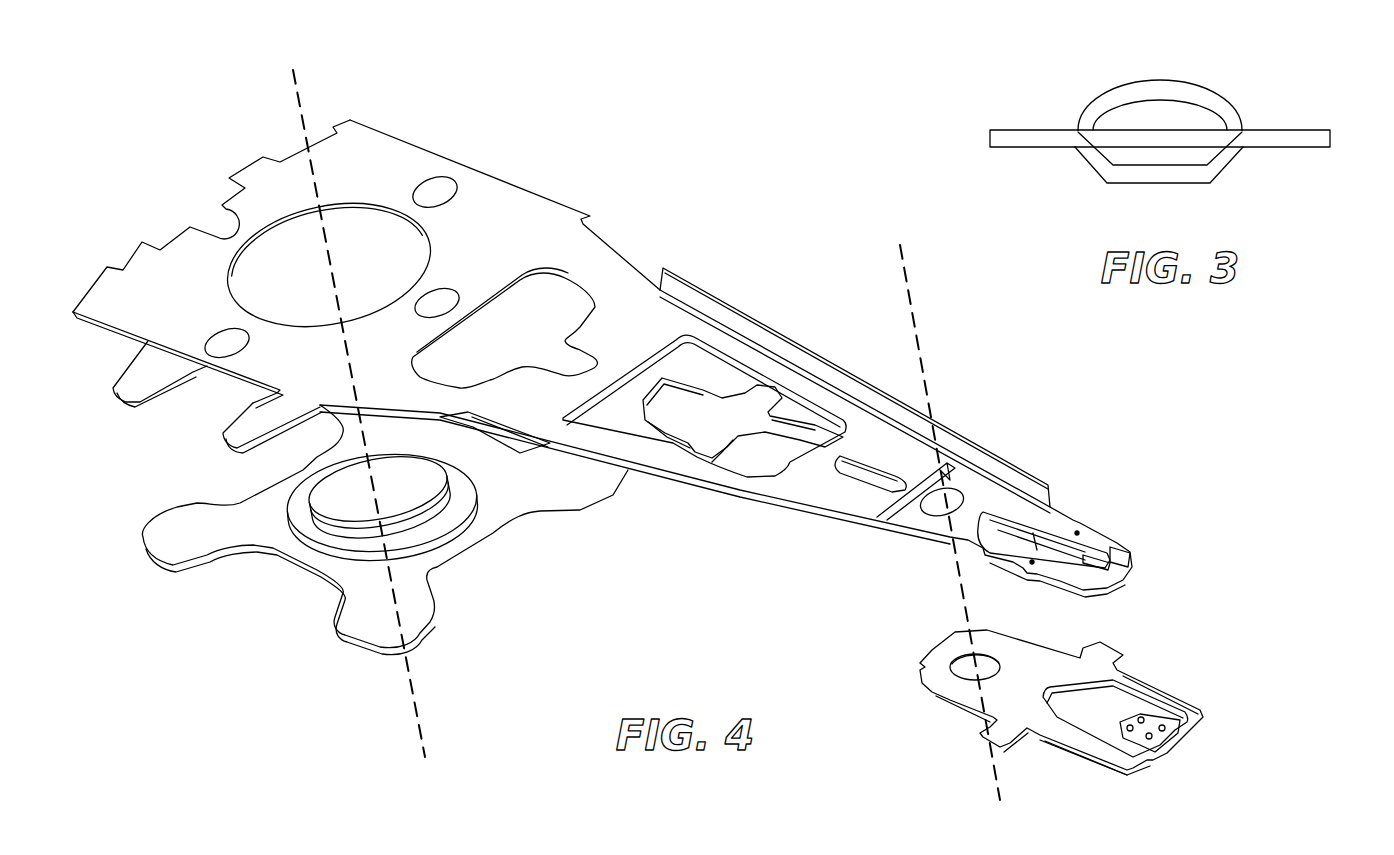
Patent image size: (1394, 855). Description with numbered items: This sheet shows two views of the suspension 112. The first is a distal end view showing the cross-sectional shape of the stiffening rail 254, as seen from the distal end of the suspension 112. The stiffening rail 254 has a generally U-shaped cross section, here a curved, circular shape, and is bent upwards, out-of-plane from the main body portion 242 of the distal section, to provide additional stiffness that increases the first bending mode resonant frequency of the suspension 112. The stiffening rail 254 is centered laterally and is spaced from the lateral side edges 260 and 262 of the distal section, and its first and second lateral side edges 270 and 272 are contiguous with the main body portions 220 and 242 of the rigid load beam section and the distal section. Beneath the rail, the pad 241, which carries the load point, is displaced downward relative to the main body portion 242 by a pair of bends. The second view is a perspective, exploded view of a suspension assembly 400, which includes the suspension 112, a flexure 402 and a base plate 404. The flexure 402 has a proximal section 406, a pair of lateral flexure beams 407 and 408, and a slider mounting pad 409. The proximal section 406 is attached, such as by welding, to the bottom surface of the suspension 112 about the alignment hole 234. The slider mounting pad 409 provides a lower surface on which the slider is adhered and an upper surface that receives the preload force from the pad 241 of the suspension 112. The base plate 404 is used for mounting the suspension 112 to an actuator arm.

In FIG. 4, the suspension 112 is at (545, 192).
In FIG. 3, the suspension 112 is at (1245, 75).
In FIG. 4, the suspension assembly 400 is at (762, 255).
In FIG. 4, the base plate 404 is at (493, 533).
In FIG. 4, the alignment hole 234 is at (957, 487).
In FIG. 4, the pad 241 is at (1121, 543).
In FIG. 3, the pad 241 is at (1153, 185).
In FIG. 4, the flexure 402 is at (1137, 667).
In FIG. 4, the proximal section 406 is at (937, 680).
In FIG. 4, the lateral flexure beam 407 is at (1153, 690).
In FIG. 4, the lateral flexure beam 408 is at (1077, 747).
In FIG. 4, the slider mounting pad 409 is at (1140, 750).
In FIG. 3, the main body portion 242 is at (1027, 130).
In FIG. 3, the stiffening rail 254 is at (1152, 80).
In FIG. 3, the lateral side edge 262 is at (990, 138).
In FIG. 3, the lateral side edge 260 is at (1330, 140).
In FIG. 3, the first lateral side edge 270 is at (1240, 128).
In FIG. 3, the second lateral side edge 272 is at (1081, 128).
In FIG. 3, the main body portion 220 is at (1190, 127).